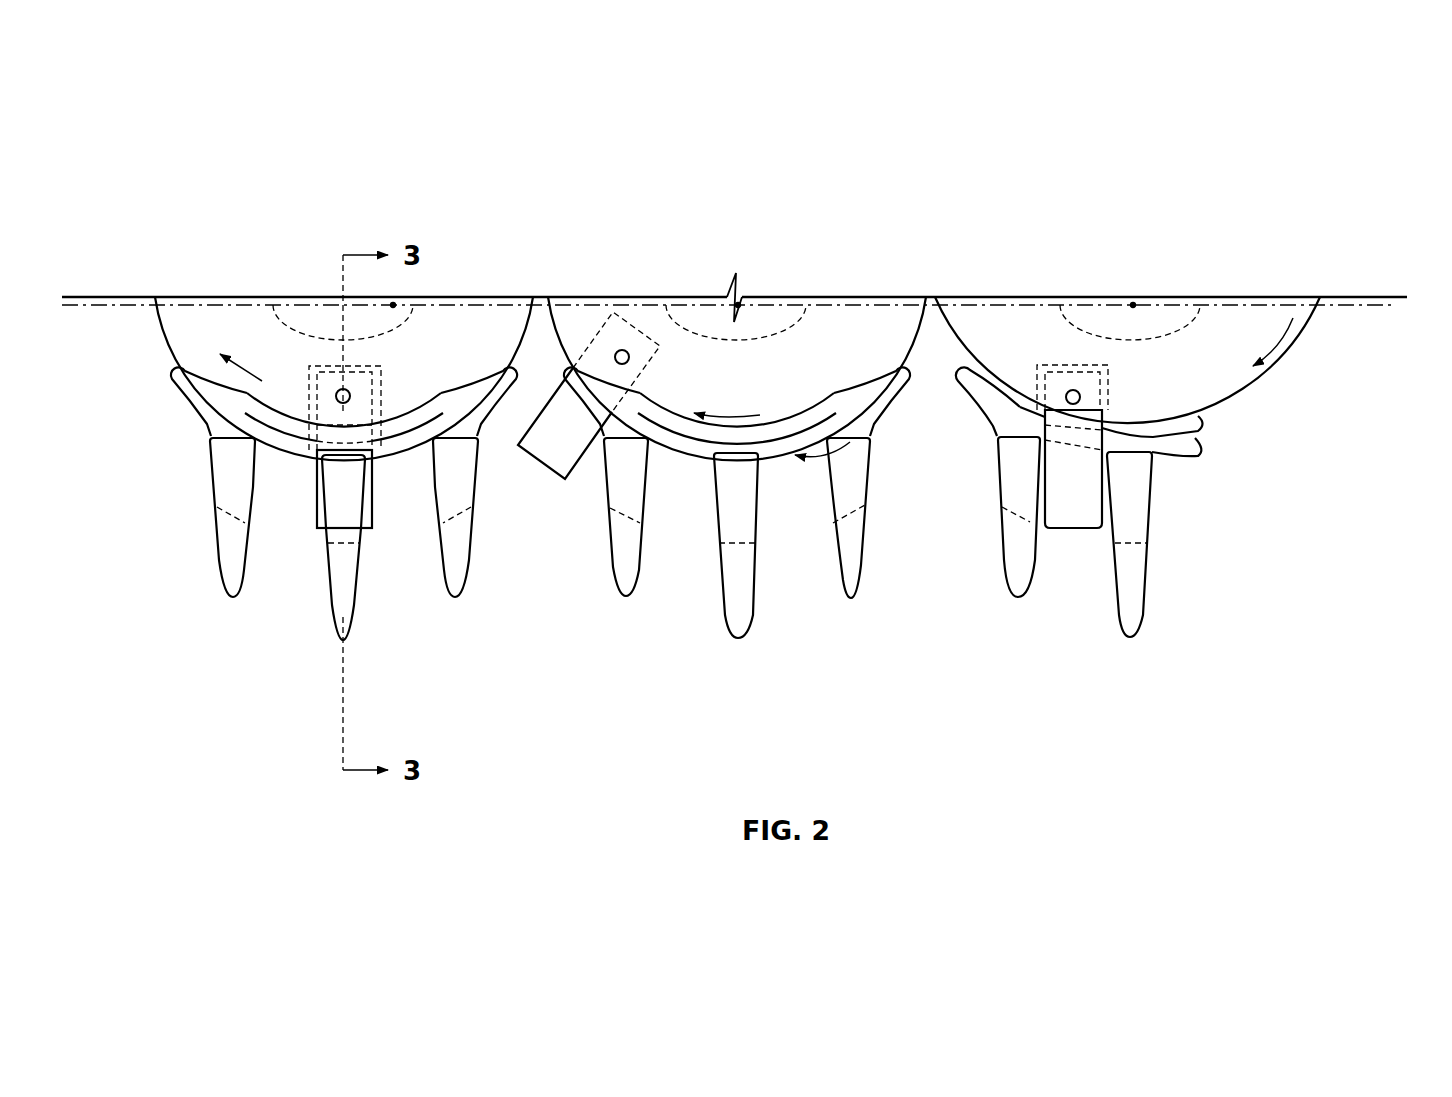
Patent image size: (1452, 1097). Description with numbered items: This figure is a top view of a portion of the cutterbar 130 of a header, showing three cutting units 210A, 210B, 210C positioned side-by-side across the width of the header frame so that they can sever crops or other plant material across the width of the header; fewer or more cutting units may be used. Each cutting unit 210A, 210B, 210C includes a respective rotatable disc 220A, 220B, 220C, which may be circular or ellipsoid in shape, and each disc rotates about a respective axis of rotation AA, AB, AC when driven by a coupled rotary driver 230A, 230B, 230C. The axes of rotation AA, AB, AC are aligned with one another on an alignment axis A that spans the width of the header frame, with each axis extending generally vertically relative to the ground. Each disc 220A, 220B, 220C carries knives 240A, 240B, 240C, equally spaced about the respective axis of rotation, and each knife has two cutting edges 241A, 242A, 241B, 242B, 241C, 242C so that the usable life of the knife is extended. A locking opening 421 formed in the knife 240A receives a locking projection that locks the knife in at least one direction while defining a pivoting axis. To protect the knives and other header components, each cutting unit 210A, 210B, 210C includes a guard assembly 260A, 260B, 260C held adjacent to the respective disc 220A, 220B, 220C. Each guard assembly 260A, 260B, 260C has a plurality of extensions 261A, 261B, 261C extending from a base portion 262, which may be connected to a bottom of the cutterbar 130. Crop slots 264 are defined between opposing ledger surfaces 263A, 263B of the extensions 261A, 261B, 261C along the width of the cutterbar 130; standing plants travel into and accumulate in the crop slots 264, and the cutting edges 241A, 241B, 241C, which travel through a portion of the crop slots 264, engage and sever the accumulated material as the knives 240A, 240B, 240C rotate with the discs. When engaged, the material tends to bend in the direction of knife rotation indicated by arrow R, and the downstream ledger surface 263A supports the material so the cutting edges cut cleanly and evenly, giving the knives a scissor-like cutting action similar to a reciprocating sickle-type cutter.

The cutterbar 130 is at (1344, 414).
The cutting unit 210A is at (146, 358).
The cutting unit 210B is at (930, 410).
The cutting unit 210C is at (1232, 427).
The rotatable disc 220A is at (200, 310).
The rotatable disc 220B is at (583, 320).
The rotatable disc 220C is at (983, 312).
The rotary driver 230A is at (315, 312).
The rotary driver 230B is at (688, 310).
The rotary driver 230C is at (1095, 312).
The knife 240A is at (427, 378).
The knife 240B is at (518, 483).
The knife 240C is at (1053, 513).
The cutting edge 241A is at (313, 470).
The cutting edge 241B is at (578, 405).
The cutting edge 241C is at (1030, 428).
The cutting edge 242A is at (375, 530).
The cutting edge 242B is at (588, 470).
The cutting edge 242C is at (1133, 443).
The guard assembly 260A is at (196, 432).
The guard assembly 260B is at (848, 438).
The guard assembly 260C is at (1182, 471).
The extension 261A is at (245, 545).
The extension 261B is at (637, 572).
The extension 261C is at (1033, 577).
The base portion 262 is at (400, 445).
The ledger surface 263A is at (252, 487).
The ledger surface 263B is at (318, 508).
The crop slot 264 is at (255, 590).
The locking opening 421 is at (351, 396).
The direction of knife rotation R is at (247, 348).
The alignment axis A is at (1358, 305).
The axis of rotation AA is at (393, 305).
The axis of rotation AB is at (740, 303).
The axis of rotation AC is at (1135, 303).